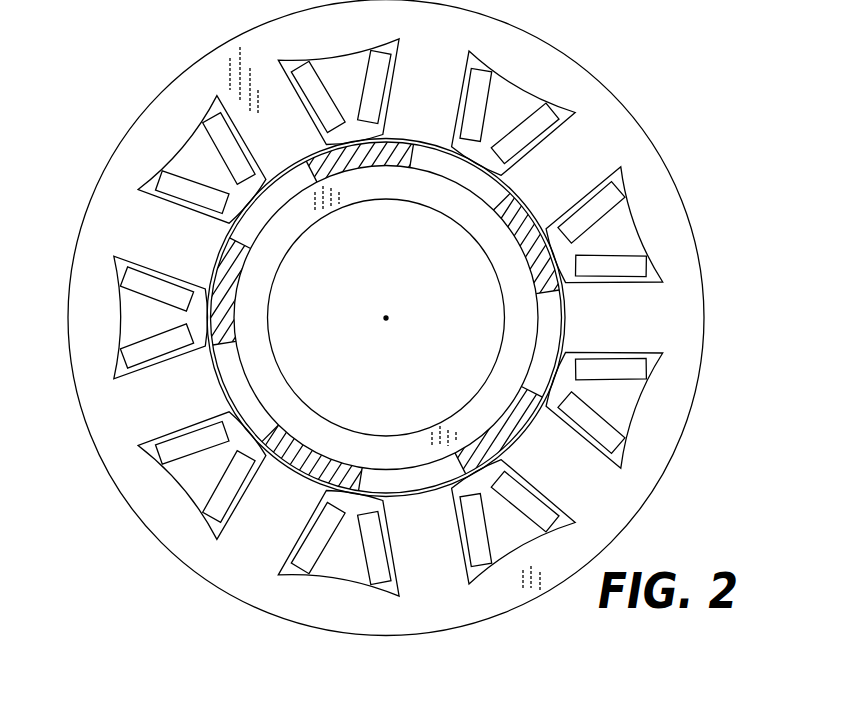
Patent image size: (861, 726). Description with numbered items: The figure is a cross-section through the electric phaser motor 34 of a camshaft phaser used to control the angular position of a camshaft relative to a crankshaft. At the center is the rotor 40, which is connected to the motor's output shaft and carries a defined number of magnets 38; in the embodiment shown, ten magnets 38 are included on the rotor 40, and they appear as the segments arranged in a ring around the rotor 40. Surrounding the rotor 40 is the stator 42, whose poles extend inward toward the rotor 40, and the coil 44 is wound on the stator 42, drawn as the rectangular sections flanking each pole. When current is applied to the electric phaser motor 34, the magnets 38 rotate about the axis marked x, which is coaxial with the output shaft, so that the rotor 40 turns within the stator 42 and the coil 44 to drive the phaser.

The electric phaser motor 34 is at (640, 62).
The magnets 38 is at (335, 473).
The rotor 40 is at (514, 267).
The stator 42 is at (121, 213).
The coil 44 is at (163, 455).